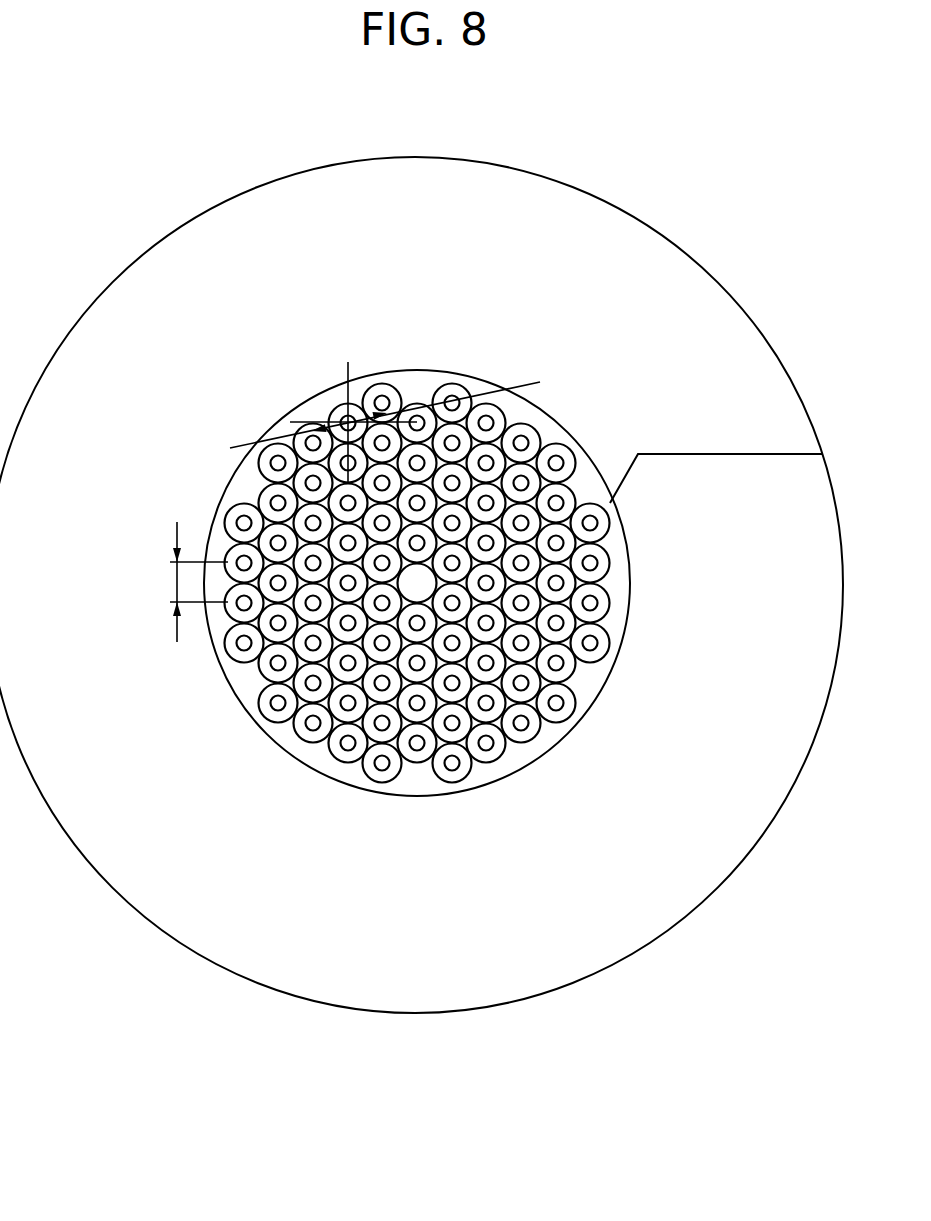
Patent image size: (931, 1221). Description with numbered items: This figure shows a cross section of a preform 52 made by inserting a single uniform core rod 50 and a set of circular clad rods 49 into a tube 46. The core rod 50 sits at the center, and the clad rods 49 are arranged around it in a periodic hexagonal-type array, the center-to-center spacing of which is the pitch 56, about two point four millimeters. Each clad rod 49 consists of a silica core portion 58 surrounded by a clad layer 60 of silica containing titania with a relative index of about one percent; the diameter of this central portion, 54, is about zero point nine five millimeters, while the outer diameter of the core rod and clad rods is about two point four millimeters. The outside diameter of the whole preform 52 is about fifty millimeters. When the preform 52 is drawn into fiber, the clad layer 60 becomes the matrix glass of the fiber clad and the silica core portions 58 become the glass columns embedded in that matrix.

The tube 46 is at (631, 596).
The cylindrical clad rod 49 is at (603, 563).
The core rod 50 is at (416, 583).
The preform 52 is at (740, 833).
The central portion diameter of the clad rods 54 is at (352, 416).
The pitch 56 is at (177, 580).
The silica core portion 58 is at (347, 743).
The clad layer 60 is at (450, 763).